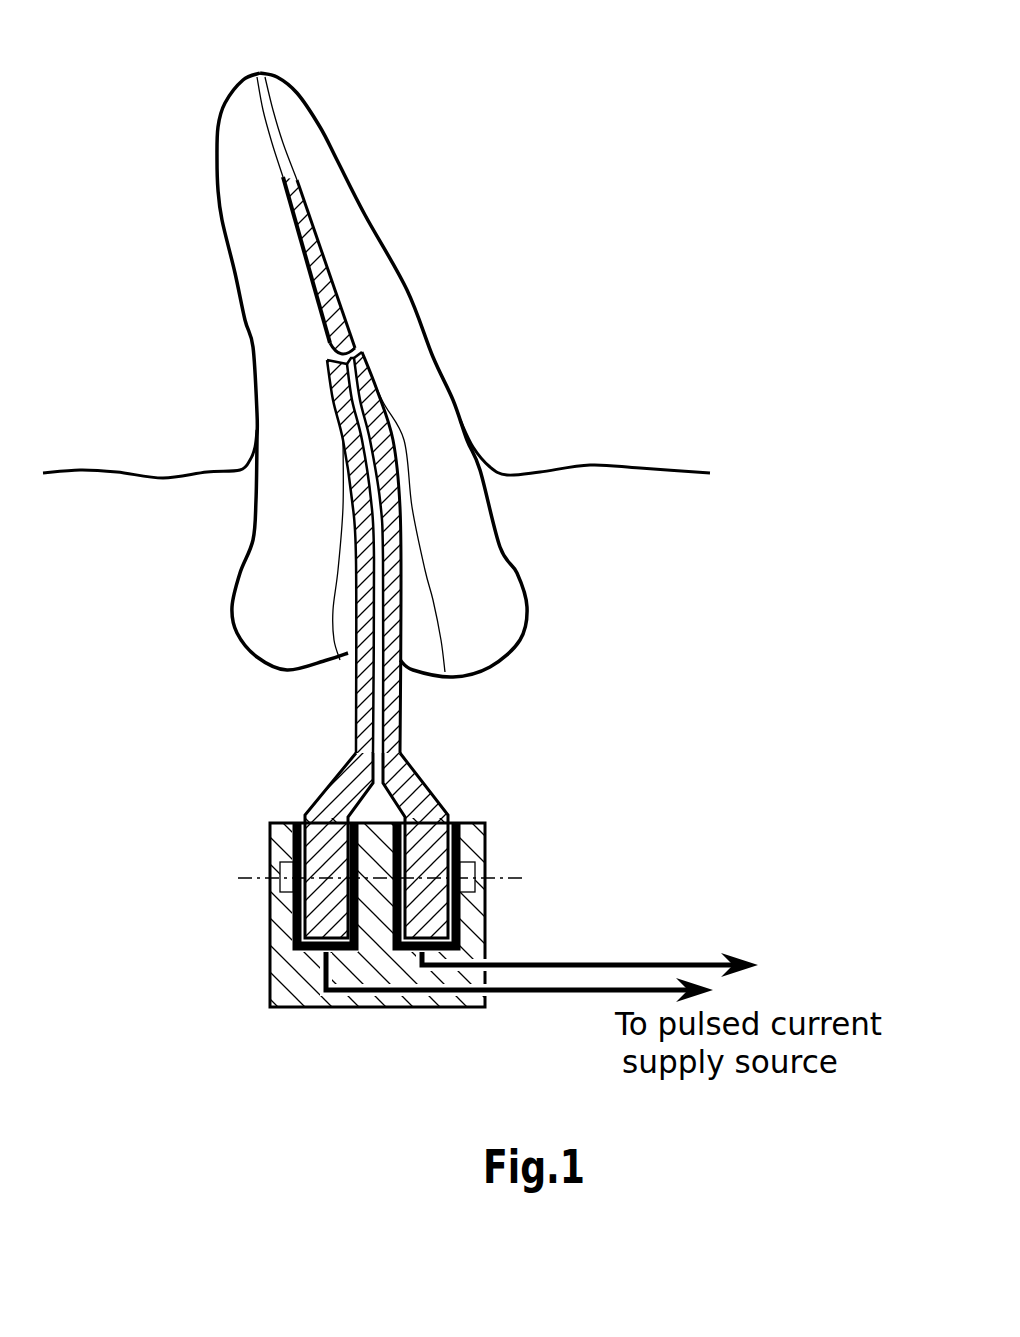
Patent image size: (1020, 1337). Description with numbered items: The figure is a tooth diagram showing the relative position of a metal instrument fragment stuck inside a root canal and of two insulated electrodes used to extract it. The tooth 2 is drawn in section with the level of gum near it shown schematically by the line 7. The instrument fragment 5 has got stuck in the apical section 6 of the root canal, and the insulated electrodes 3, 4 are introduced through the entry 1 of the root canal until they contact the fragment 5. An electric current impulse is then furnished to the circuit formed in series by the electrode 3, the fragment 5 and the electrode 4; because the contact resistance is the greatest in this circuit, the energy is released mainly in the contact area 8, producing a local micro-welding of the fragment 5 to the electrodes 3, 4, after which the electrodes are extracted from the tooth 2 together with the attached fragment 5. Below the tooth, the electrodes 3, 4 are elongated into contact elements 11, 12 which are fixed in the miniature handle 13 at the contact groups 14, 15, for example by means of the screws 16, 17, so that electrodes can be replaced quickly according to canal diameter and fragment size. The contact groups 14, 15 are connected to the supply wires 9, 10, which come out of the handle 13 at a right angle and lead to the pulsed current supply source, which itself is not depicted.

The entry 1 is at (420, 643).
The tooth 2 is at (372, 375).
The insulated electrode 3 is at (363, 523).
The insulated electrode 4 is at (400, 513).
The instrument fragment 5 is at (323, 288).
The apical section of the root canal 6 is at (270, 128).
The gum level line 7 is at (376, 449).
The contact area 8 is at (320, 340).
The supply wire 9 is at (519, 996).
The supply wire 10 is at (590, 948).
The contact element 11 is at (327, 845).
The contact element 12 is at (430, 847).
The handle 13 is at (290, 980).
The contact group 14 is at (312, 952).
The contact group 15 is at (415, 952).
The screw 16 is at (278, 863).
The screw 17 is at (477, 862).